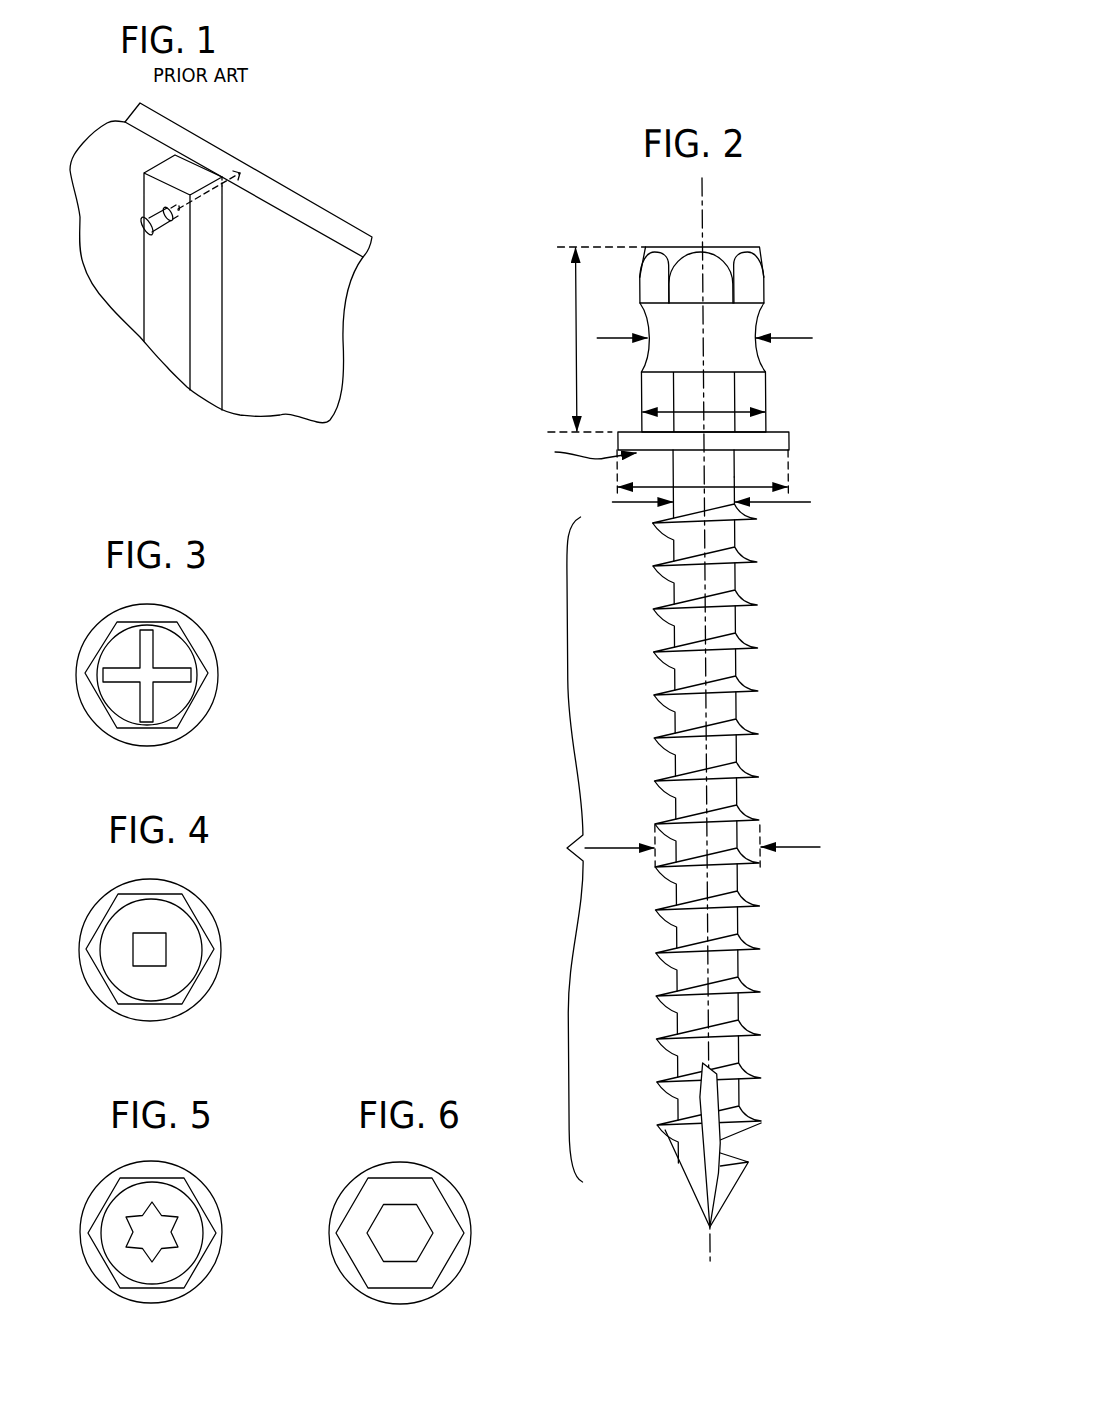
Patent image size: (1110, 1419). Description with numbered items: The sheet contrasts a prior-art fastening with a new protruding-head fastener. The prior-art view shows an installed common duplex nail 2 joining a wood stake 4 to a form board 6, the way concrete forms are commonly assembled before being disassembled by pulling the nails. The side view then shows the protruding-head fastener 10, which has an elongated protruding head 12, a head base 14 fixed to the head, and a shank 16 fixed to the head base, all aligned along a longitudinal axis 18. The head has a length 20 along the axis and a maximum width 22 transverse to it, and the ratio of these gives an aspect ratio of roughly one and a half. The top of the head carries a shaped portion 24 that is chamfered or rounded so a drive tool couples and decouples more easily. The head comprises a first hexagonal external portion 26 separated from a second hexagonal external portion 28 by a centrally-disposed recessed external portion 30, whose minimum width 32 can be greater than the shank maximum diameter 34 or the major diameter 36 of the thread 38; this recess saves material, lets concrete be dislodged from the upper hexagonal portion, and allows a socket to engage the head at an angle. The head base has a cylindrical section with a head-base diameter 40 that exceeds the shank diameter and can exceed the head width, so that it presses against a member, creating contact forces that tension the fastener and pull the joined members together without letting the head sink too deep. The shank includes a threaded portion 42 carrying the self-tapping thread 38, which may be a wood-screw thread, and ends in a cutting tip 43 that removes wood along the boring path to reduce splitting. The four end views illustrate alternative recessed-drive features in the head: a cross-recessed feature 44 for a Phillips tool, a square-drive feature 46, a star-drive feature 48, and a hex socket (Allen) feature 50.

In FIG. 1, the common duplex nail 2 is at (141, 218).
In FIG. 1, the wood stake 4 is at (176, 271).
In FIG. 1, the form board 6 is at (263, 271).
In FIG. 2, the protruding-head fastener 10 is at (620, 235).
In FIG. 2, the elongated protruding head 12 is at (737, 311).
In FIG. 2, the head base 14 is at (786, 441).
In FIG. 2, the shank 16 is at (739, 838).
In FIG. 2, the longitudinal axis 18 is at (705, 210).
In FIG. 2, the length of the protruding head 20 is at (597, 339).
In FIG. 2, the maximum width of the protruding head 22 is at (715, 415).
In FIG. 2, the shaped portion 24 is at (764, 251).
In FIG. 2, the first hexagonal external portion 26 is at (698, 296).
In FIG. 2, the second hexagonal external portion 28 is at (696, 401).
In FIG. 2, the centrally-disposed recessed external portion 30 is at (688, 337).
In FIG. 2, the minimum width of the recessed external portion 32 is at (796, 340).
In FIG. 2, the shank maximum diameter 34 is at (794, 503).
In FIG. 2, the major diameter of the thread 36 is at (751, 846).
In FIG. 2, the self-tapping thread 38 is at (743, 815).
In FIG. 2, the head-base diameter 40 is at (720, 486).
In FIG. 2, the threaded portion 42 is at (599, 849).
In FIG. 2, the cutting tip 43 is at (710, 1137).
In FIG. 3, the recessed-drive feature having a cross-recessed configuration 44 is at (135, 650).
In FIG. 4, the recessed-drive feature having a square-drive configuration 46 is at (133, 947).
In FIG. 5, the recessed-drive feature having a star-drive configuration 48 is at (138, 1207).
In FIG. 6, the recessed-drive feature having a hex socket (Allen) configuration 50 is at (385, 1212).